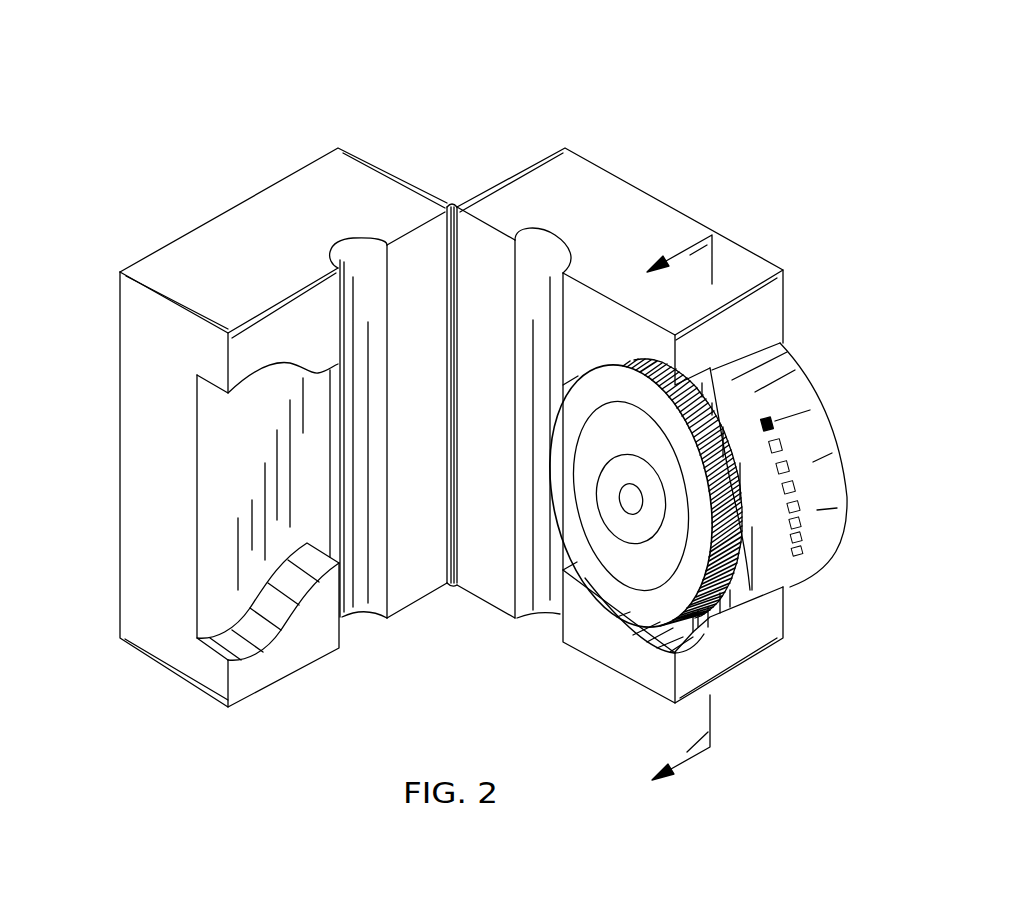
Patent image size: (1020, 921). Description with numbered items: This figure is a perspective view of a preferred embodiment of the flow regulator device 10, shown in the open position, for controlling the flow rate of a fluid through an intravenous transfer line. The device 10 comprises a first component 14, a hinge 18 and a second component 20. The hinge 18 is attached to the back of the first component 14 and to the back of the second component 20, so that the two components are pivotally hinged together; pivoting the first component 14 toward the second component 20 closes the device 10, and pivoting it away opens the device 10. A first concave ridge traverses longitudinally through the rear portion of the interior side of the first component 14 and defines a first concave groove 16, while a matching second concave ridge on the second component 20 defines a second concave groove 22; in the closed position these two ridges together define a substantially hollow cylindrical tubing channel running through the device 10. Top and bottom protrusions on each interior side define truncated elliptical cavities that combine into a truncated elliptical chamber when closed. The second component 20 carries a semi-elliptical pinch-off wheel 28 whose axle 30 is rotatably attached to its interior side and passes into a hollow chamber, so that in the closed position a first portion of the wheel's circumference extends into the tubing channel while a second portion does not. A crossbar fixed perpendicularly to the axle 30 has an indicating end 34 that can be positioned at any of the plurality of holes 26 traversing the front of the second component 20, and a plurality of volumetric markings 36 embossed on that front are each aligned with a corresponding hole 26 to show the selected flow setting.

The flow regulator device 10 is at (235, 124).
The first component 14 is at (143, 478).
The first concave groove 16 is at (352, 250).
The hinge 18 is at (452, 205).
The second component 20 is at (660, 220).
The second concave groove 22 is at (545, 252).
The plurality of holes 26 is at (781, 588).
The semi-elliptical pinch-off wheel 28 is at (630, 563).
The axle 30 is at (626, 497).
The indicating end 34 is at (767, 413).
The plurality of volumetric markings 36 is at (826, 512).